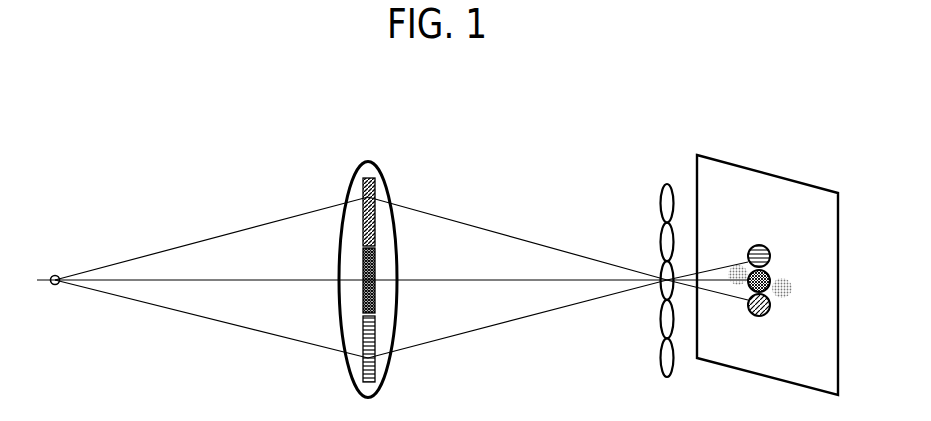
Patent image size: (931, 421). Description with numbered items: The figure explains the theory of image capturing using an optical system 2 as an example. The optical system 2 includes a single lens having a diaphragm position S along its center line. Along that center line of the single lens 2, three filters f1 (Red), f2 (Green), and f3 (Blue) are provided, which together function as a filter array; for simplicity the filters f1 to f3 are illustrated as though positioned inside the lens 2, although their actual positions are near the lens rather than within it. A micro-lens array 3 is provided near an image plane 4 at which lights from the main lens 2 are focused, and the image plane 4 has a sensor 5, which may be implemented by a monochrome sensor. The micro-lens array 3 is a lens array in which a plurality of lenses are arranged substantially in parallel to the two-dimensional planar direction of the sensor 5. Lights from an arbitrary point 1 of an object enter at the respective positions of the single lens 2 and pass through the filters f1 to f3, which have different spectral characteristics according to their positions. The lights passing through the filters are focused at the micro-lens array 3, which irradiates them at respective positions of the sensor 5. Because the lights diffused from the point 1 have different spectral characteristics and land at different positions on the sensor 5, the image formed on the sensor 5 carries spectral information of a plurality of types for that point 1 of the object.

The point of an object 1 is at (58, 277).
The diaphragm position S is at (368, 160).
The optical system 2 is at (388, 190).
The filter f1 is at (362, 227).
The filter f2 is at (362, 287).
The filter f3 is at (362, 364).
The micro-lens array 3 is at (661, 200).
The image plane 4 is at (786, 179).
The sensor 5 is at (771, 319).